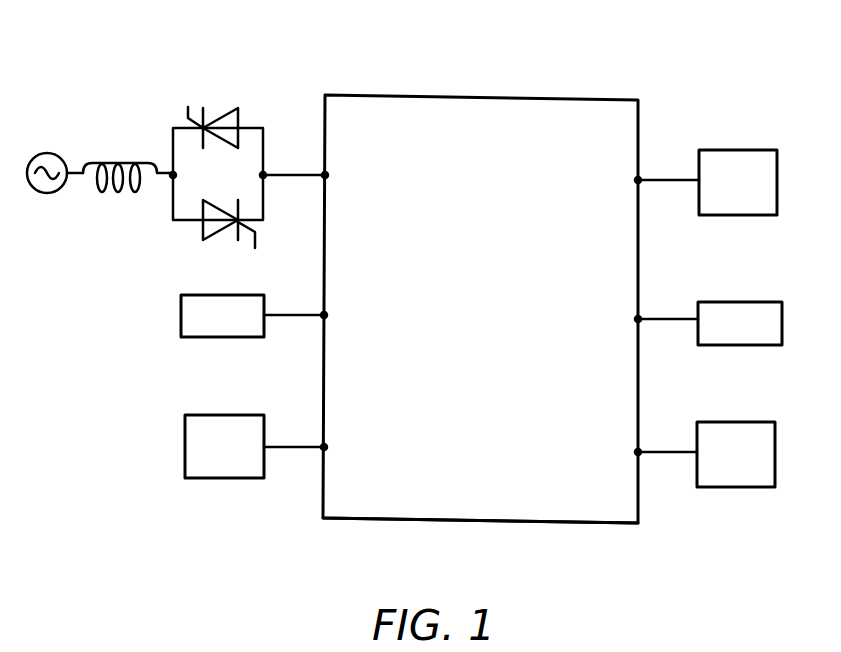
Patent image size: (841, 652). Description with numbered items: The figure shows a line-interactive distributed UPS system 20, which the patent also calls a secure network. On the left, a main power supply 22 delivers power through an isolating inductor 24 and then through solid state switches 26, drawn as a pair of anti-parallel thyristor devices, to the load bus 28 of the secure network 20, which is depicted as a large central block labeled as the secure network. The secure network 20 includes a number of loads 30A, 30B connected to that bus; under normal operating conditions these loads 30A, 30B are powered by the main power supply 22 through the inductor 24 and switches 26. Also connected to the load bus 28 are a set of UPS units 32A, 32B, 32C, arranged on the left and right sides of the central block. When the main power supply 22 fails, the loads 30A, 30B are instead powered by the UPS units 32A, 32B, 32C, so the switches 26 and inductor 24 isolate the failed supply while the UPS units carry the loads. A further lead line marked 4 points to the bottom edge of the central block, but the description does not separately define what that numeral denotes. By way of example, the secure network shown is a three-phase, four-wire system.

The line-interactive distributed UPS system 20 is at (302, 47).
The main power supply 22 is at (43, 193).
The isolating inductor 24 is at (122, 163).
The solid state switches 26 is at (205, 240).
The load bus 28 is at (358, 95).
The secure network bus 4 is at (442, 507).
The load 30A is at (228, 337).
The load 30B is at (720, 302).
The UPS unit 32A is at (243, 478).
The UPS unit 32B is at (720, 147).
The UPS unit 32C is at (752, 487).